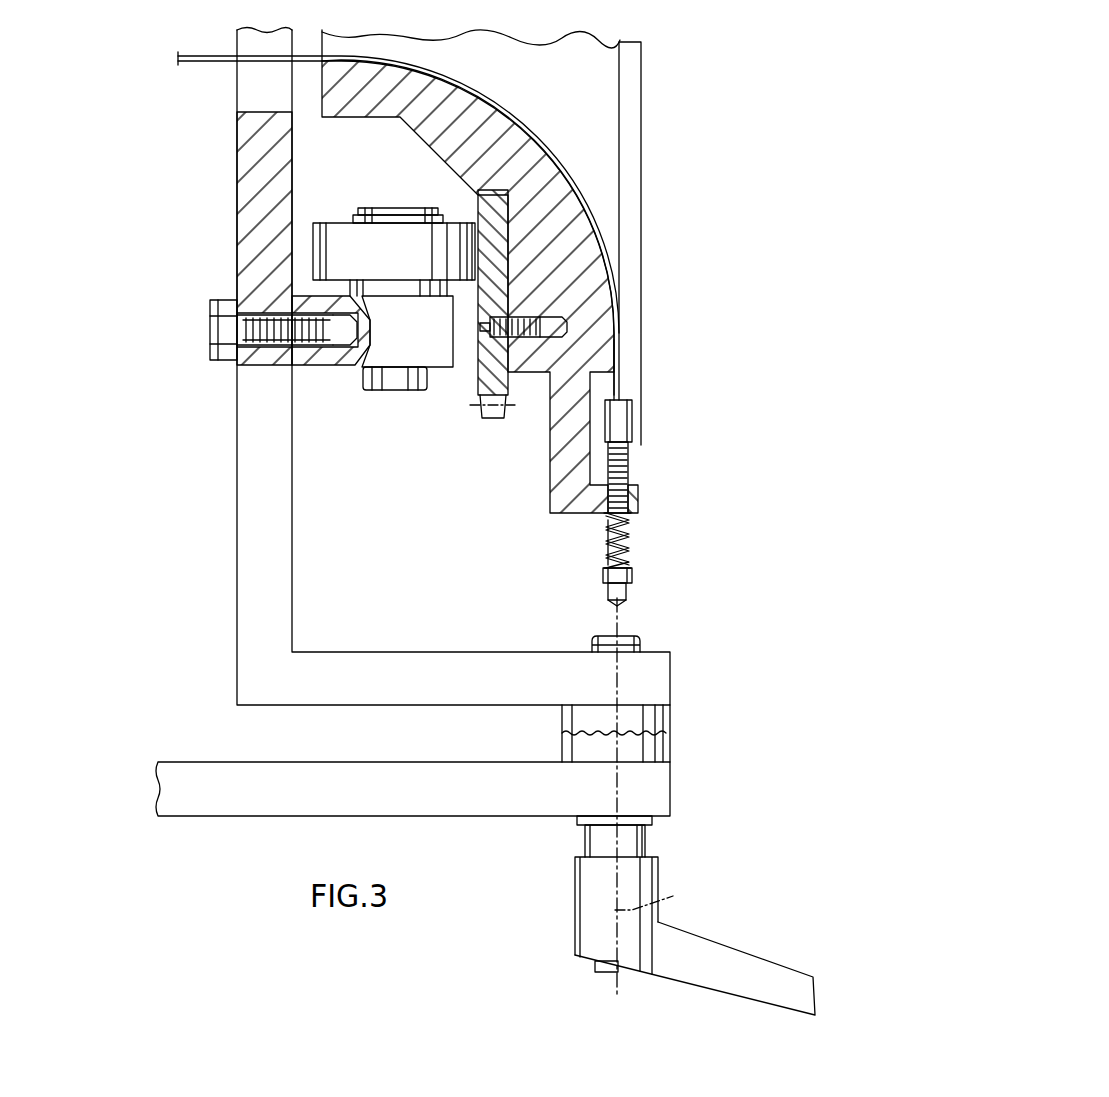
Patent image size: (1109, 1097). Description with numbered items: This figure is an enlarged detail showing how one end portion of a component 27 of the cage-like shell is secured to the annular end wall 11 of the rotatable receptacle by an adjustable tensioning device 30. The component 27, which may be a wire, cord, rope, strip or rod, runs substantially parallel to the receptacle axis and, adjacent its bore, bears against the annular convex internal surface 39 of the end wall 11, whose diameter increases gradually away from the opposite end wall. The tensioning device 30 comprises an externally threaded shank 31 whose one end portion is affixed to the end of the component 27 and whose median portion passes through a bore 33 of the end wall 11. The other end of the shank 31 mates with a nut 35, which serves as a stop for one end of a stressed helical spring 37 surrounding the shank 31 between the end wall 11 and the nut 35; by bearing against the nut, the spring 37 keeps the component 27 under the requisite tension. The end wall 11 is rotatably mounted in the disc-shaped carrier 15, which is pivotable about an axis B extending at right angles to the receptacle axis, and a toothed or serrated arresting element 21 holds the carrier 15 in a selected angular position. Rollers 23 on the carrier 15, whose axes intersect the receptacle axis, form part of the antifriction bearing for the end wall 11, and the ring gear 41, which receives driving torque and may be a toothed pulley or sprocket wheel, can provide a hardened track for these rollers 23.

The end wall 11 is at (572, 232).
The carrier 15 is at (243, 450).
The arresting element 21 is at (656, 750).
The roller 23 is at (332, 232).
The component 27 is at (556, 152).
The tensioning device 30 is at (636, 448).
The shank 31 is at (630, 548).
The bore 33 is at (640, 495).
The nut 35 is at (632, 578).
The helical spring 37 is at (630, 540).
The internal surface 39 is at (617, 272).
The ring gear 41 is at (482, 383).
The axis B is at (657, 897).